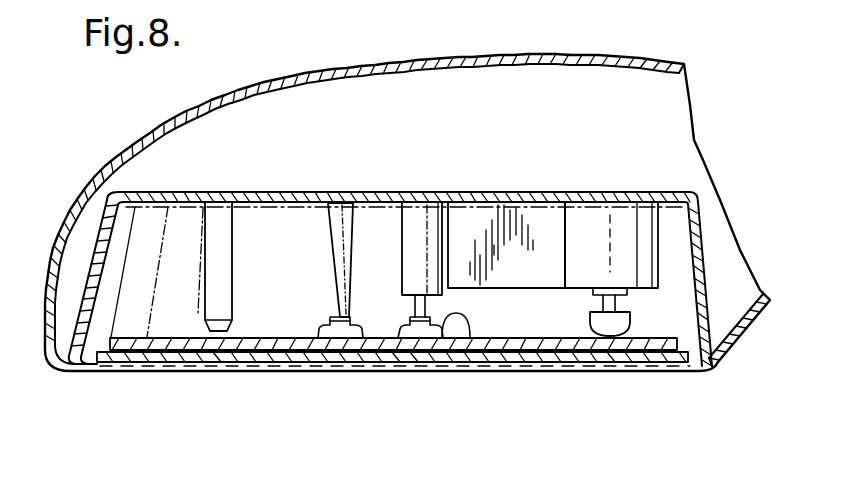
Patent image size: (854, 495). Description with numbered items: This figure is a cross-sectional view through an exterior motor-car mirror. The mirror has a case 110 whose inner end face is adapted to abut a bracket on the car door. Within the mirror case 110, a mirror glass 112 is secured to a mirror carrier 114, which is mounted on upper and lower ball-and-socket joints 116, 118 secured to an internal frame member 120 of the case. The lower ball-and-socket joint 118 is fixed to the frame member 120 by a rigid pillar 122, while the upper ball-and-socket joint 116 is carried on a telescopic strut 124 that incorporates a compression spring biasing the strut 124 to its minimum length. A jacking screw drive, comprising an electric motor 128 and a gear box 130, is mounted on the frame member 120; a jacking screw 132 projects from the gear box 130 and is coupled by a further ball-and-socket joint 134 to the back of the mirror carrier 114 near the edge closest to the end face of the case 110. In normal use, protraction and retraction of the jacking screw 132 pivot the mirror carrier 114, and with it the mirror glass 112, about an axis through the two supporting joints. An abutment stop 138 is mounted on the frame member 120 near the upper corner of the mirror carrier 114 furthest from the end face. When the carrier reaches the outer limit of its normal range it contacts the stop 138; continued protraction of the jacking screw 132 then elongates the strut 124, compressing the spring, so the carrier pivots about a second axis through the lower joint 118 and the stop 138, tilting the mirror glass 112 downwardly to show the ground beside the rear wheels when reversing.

The mirror case 110 is at (348, 66).
The mirror glass 112 is at (253, 357).
The mirror carrier 114 is at (167, 343).
The upper ball-and-socket joint 116 is at (467, 328).
The lower ball-and-socket joint 118 is at (333, 330).
The internal frame member 120 is at (380, 192).
The rigid pillar 122 is at (337, 255).
The telescopic strut 124 is at (413, 280).
The electric motor 128 is at (510, 210).
The gear box 130 is at (598, 213).
The jacking screw 132 is at (603, 302).
The ball-and-socket joint 134 is at (612, 323).
The abutment stop 138 is at (212, 267).